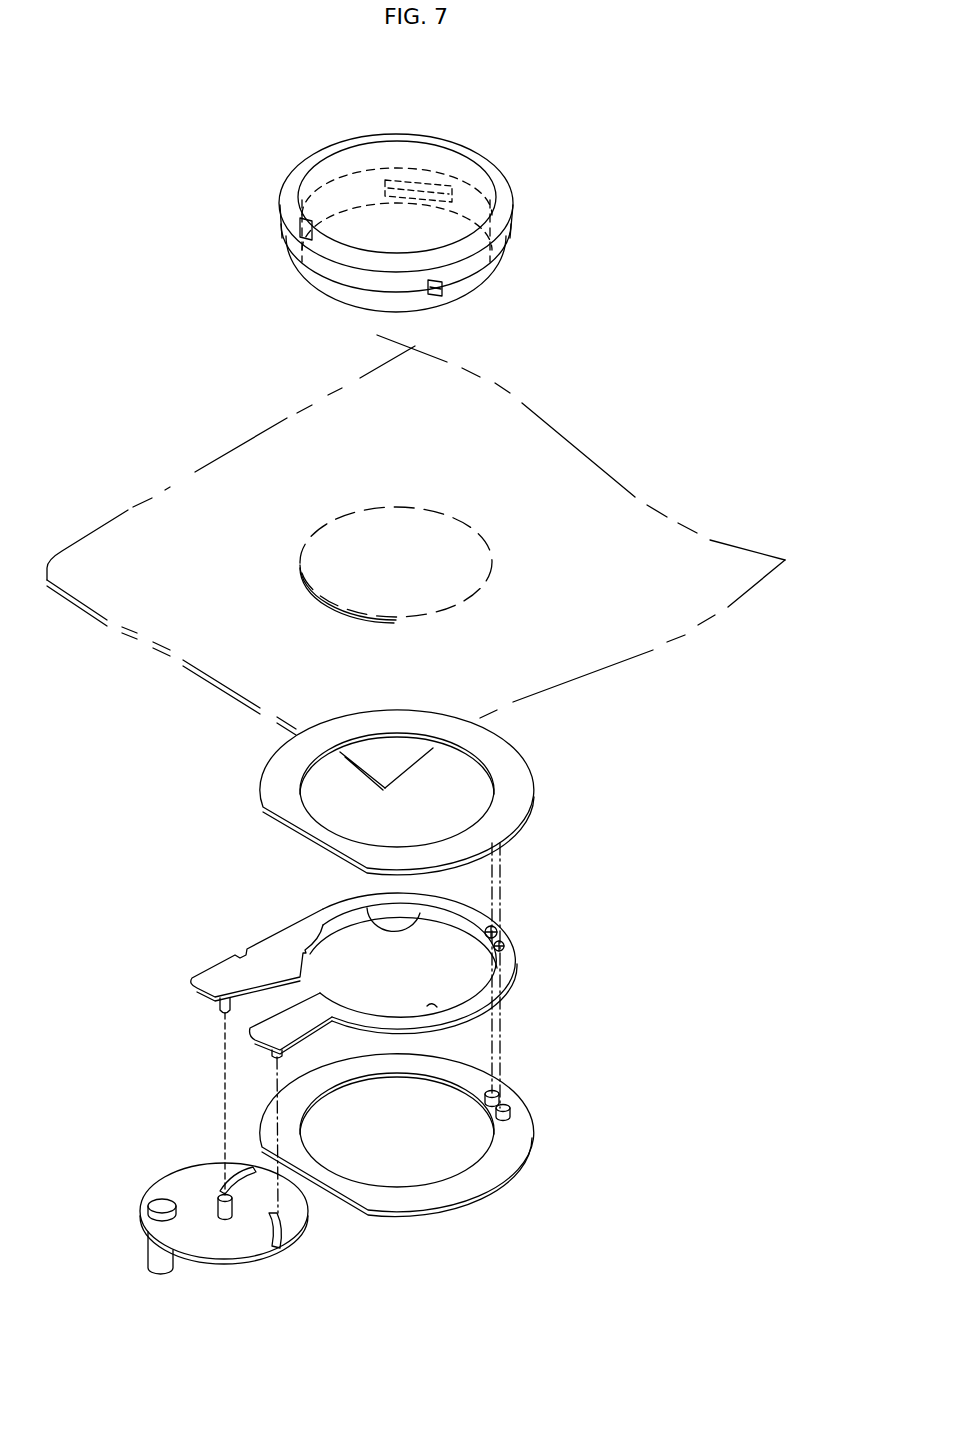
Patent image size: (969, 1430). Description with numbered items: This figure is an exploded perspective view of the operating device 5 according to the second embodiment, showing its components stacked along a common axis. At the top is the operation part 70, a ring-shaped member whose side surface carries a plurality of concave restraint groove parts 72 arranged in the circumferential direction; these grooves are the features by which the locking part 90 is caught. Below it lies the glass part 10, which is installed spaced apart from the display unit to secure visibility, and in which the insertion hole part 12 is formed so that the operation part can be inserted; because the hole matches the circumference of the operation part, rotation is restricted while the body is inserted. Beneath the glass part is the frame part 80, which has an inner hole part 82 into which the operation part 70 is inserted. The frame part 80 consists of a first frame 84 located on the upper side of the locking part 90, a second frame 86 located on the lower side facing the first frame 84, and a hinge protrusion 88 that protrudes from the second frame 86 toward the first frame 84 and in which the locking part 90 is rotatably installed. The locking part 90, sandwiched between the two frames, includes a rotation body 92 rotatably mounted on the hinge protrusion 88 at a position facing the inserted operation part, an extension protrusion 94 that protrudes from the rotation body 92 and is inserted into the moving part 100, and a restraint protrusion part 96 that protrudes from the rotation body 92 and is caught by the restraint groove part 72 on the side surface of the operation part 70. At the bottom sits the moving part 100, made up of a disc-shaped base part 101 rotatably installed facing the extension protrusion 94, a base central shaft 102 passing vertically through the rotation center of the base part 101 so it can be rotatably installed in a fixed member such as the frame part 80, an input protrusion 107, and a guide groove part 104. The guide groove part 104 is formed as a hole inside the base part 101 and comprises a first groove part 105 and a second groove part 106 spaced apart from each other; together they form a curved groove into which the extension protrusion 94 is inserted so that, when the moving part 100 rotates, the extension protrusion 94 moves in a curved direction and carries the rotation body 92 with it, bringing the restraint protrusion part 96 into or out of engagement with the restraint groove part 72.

The operating device 5 is at (108, 276).
The glass part 10 is at (197, 502).
The insertion hole part 12 is at (421, 532).
The operation part 70 is at (494, 157).
The restraint groove part 72 is at (443, 284).
The frame part 80 is at (545, 772).
The inner hole part 82 is at (458, 796).
The first frame 84 is at (280, 787).
The second frame 86 is at (473, 1182).
The hinge protrusion 88 is at (502, 1088).
The locking part 90 is at (530, 967).
The rotation body 92 is at (497, 990).
The extension protrusion 94 is at (222, 1010).
The restraint protrusion part 96 is at (413, 933).
The moving part 100 is at (227, 1280).
The base part 101 is at (200, 1247).
The base central shaft 102 is at (212, 1203).
The guide groove part 104 is at (377, 1268).
The first groove part 105 is at (237, 1186).
The second groove part 106 is at (280, 1233).
The input protrusion 107 is at (157, 1260).